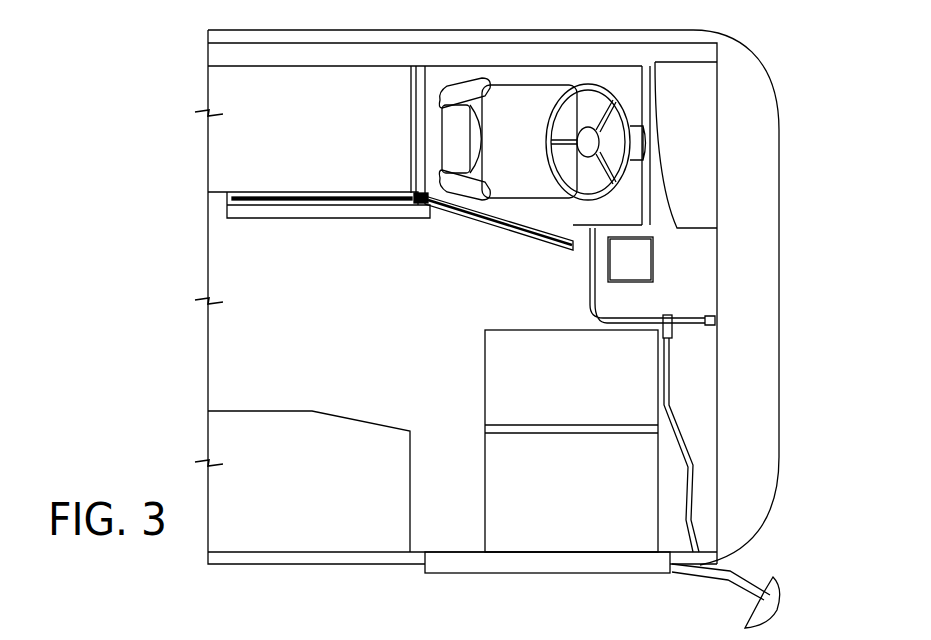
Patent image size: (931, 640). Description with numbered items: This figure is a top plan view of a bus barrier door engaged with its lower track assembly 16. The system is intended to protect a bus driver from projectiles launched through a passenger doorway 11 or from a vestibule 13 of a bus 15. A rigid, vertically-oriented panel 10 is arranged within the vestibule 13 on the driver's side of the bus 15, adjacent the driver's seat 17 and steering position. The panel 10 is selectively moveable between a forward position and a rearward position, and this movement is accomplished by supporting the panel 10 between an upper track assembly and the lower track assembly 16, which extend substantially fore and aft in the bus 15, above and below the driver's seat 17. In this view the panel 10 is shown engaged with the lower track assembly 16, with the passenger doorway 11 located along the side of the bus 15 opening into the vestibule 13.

The panel 10 is at (330, 213).
The passenger doorway 11 is at (427, 562).
The vestibule 13 is at (457, 331).
The bus 15 is at (742, 32).
The lower track assembly 16 is at (438, 192).
The driver's seat 17 is at (532, 151).